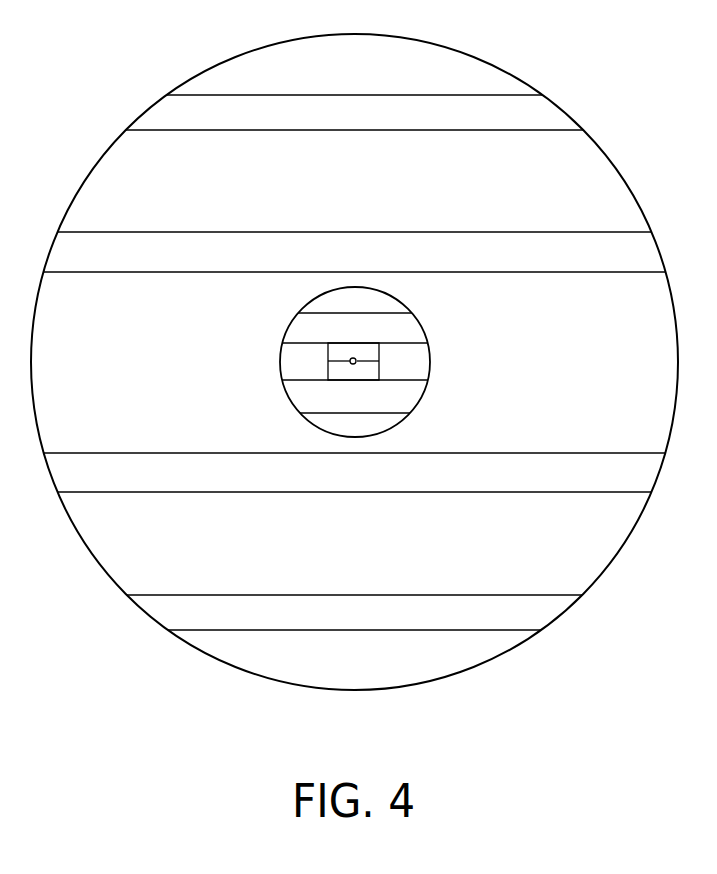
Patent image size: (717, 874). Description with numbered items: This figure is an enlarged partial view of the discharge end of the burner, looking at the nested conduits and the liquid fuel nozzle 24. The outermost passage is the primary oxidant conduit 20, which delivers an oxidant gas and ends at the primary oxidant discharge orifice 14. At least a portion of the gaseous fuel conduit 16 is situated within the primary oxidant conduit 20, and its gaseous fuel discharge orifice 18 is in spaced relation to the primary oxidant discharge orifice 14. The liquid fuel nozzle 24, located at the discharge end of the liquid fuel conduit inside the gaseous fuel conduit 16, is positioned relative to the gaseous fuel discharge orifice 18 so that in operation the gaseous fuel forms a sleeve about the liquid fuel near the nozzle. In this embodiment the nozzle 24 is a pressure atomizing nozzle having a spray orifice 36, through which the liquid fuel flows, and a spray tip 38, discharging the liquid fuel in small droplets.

The primary oxidant discharge orifice 14 is at (395, 198).
The gaseous fuel conduit 16 is at (587, 250).
The gaseous fuel discharge orifice 18 is at (197, 300).
The primary oxidant conduit 20 is at (473, 115).
The liquid fuel nozzle 24 is at (398, 325).
The spray orifice 36 is at (353, 364).
The spray tip 38 is at (367, 363).